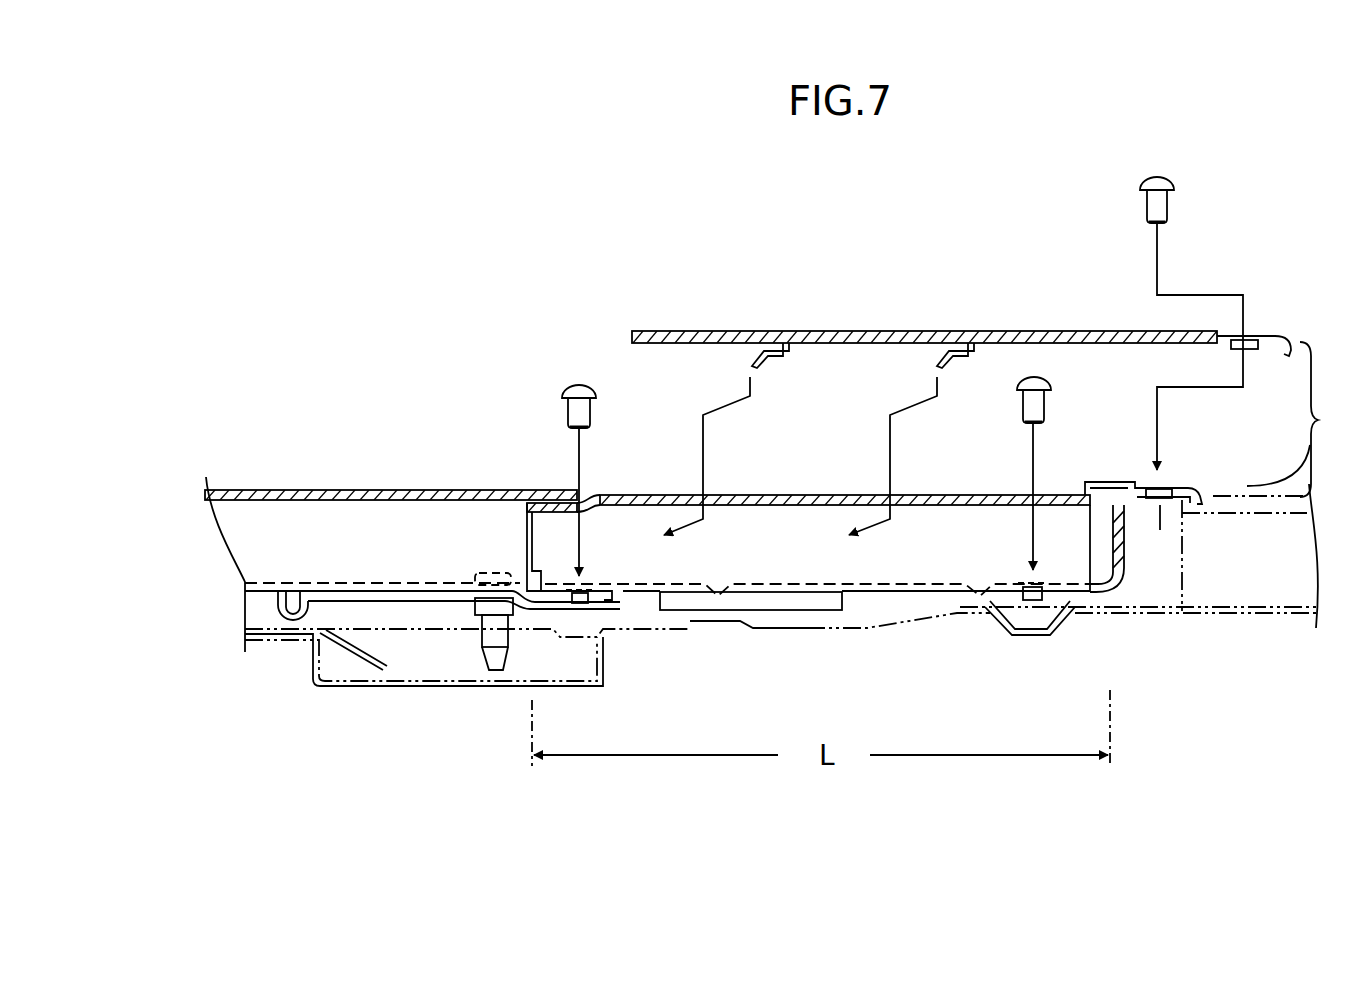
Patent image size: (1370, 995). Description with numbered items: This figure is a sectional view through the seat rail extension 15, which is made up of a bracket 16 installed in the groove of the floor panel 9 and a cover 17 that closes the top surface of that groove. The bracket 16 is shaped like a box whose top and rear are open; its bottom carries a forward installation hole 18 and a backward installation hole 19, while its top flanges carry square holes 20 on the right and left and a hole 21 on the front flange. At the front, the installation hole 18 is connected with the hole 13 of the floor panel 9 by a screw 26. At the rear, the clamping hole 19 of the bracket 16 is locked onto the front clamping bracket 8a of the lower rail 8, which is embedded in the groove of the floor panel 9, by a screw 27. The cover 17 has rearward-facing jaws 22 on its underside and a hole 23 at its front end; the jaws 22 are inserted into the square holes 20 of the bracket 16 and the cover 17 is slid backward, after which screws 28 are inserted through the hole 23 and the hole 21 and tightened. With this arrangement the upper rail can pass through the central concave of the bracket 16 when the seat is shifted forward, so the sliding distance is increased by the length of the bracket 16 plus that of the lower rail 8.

The lower rail 8 is at (258, 552).
The front clamping bracket 8a is at (604, 602).
The floor panel 9 is at (895, 625).
The hole 13 is at (1033, 600).
The extension 15 is at (1329, 419).
The bracket 16 is at (1060, 492).
The cover 17 is at (672, 331).
The forward installation hole 18 is at (1030, 583).
The backward installation hole 19 is at (585, 590).
The square holes 20 is at (720, 494).
The hole 21 is at (1159, 500).
The jaws 22 is at (748, 361).
The hole 23 is at (1246, 332).
The screw 26 is at (1053, 381).
The screw 27 is at (578, 383).
The screws 28 is at (1168, 182).